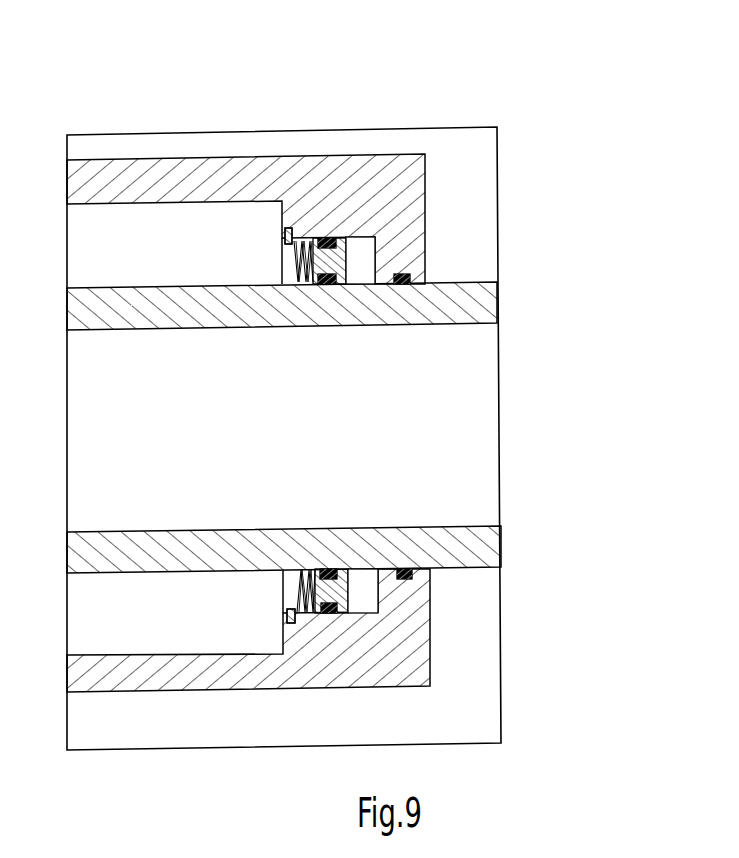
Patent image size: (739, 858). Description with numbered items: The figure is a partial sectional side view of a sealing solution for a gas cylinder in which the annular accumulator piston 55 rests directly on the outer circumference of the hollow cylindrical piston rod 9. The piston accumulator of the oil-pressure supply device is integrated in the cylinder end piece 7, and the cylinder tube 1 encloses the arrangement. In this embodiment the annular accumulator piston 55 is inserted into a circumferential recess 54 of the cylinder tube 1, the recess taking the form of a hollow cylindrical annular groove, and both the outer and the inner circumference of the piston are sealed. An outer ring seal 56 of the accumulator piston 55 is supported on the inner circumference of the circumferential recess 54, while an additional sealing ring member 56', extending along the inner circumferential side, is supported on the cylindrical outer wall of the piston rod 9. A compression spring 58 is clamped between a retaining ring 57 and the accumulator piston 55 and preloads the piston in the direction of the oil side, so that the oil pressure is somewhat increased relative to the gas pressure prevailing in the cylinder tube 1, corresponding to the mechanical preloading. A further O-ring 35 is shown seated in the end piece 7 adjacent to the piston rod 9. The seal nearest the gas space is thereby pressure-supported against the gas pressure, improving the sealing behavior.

The cylinder tube 1 is at (113, 162).
The cylinder end piece 7 is at (405, 623).
The piston rod 9 is at (463, 307).
The O-ring 35 is at (401, 282).
The circumferential recess 54 is at (375, 262).
The accumulator piston 55 is at (346, 255).
The outer ring seal 56 is at (388, 318).
The sealing ring member 56' is at (340, 443).
The retaining ring 57 is at (288, 228).
The compression spring 58 is at (304, 280).